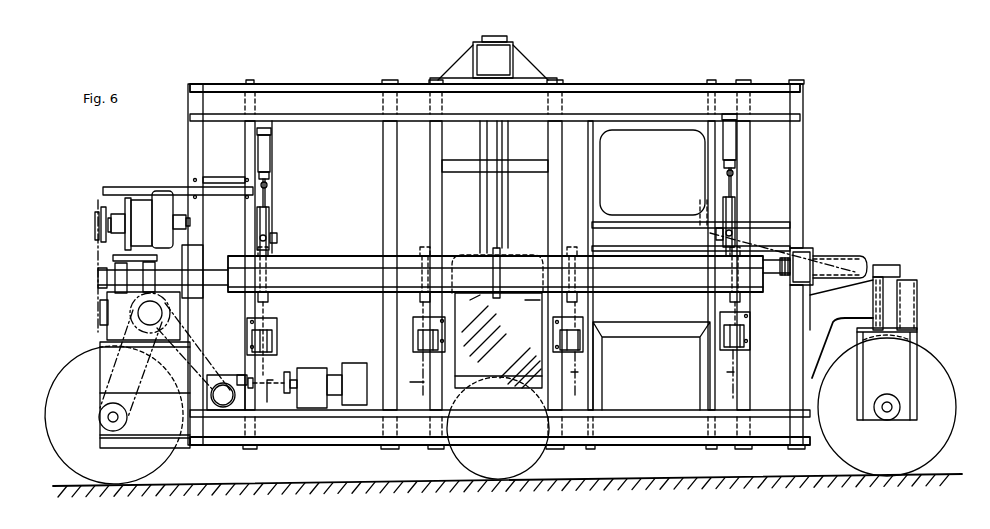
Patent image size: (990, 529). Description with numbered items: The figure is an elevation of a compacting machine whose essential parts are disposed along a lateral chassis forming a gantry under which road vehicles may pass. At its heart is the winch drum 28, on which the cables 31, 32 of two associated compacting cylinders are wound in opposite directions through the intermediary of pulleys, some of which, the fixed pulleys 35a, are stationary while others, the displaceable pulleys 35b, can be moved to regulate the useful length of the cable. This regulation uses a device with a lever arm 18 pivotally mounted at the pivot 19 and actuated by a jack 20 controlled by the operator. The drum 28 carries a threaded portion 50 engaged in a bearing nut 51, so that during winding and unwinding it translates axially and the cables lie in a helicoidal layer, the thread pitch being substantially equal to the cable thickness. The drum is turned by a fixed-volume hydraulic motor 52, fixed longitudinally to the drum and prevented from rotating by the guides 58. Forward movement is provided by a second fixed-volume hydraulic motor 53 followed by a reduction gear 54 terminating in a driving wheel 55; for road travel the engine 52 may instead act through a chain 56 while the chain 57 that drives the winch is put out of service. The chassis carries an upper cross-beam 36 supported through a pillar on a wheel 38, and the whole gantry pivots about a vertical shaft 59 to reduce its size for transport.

The lever arm 18 is at (267, 214).
The pivot 19 is at (277, 238).
The jack 20 is at (265, 161).
The winch drum 28 is at (334, 258).
The cable 31 is at (652, 374).
The cable 32 is at (345, 378).
The fixed pulleys 35a is at (423, 254).
The displaceable pulleys 35b is at (268, 301).
The upper cross-beam 36 is at (503, 67).
The wheel 38 is at (540, 452).
The threaded portion 50 is at (852, 255).
The bearing nut 51 is at (801, 266).
The hydraulic motor 52 is at (160, 192).
The hydraulic motor 53 is at (348, 366).
The reduction gear 54 is at (250, 380).
The driving wheel 55 is at (56, 402).
The chain 56 is at (97, 262).
The chain 57 is at (104, 243).
The guides 58 is at (117, 187).
The vertical shaft 59 is at (502, 231).